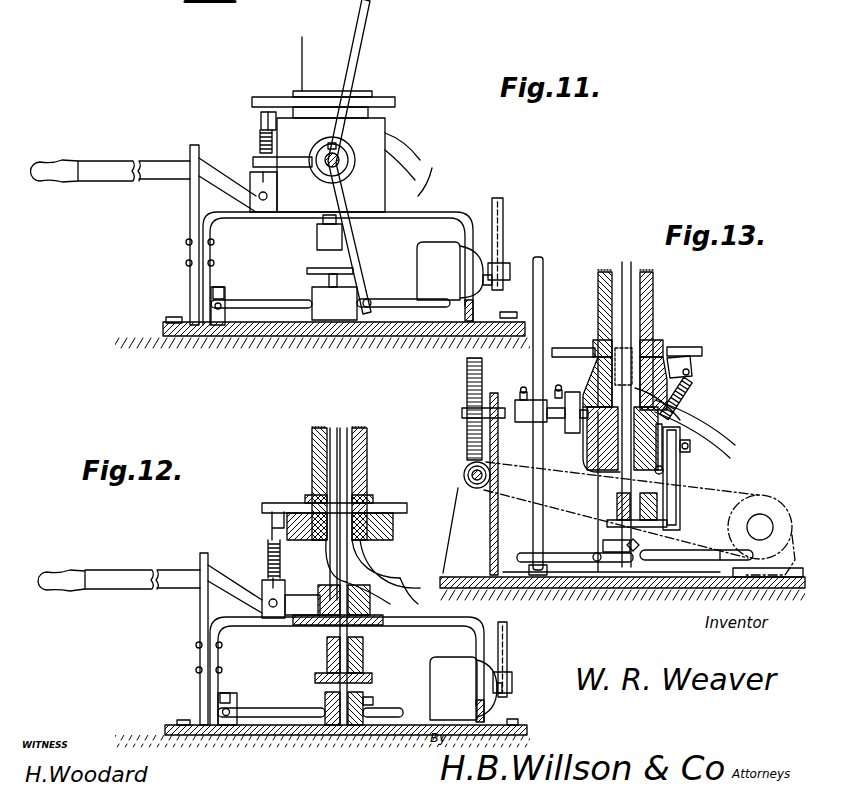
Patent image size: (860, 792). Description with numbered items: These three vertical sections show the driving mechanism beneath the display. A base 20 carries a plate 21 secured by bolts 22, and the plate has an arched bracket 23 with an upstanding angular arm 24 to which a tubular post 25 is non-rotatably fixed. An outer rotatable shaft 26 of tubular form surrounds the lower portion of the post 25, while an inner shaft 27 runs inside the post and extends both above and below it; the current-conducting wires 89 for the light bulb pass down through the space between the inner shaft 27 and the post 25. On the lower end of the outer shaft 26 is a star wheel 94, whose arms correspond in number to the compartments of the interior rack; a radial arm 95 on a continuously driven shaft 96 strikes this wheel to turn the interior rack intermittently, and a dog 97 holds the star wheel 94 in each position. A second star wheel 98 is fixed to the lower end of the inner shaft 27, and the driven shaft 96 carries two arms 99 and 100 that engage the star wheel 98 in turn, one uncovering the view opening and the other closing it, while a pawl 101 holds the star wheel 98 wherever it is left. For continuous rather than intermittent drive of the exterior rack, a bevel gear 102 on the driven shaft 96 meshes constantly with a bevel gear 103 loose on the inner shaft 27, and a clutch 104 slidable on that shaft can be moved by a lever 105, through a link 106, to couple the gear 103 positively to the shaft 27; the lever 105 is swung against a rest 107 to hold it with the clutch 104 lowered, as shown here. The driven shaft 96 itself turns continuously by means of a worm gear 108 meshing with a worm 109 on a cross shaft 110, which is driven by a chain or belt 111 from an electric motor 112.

In FIG. 11, the base 20 is at (183, 343).
In FIG. 13, the base 20 is at (557, 588).
In FIG. 11, the plate 21 is at (163, 327).
In FIG. 12, the plate 21 is at (177, 733).
In FIG. 13, the plate 21 is at (605, 581).
In FIG. 11, the bolts 22 is at (172, 320).
In FIG. 12, the bolts 22 is at (183, 725).
In FIG. 11, the arched bracket 23 is at (427, 205).
In FIG. 12, the arched bracket 23 is at (210, 620).
In FIG. 13, the arched bracket 23 is at (600, 480).
In FIG. 11, the upstanding angular arm 24 is at (387, 148).
In FIG. 12, the upstanding angular arm 24 is at (312, 541).
In FIG. 13, the upstanding angular arm 24 is at (590, 357).
In FIG. 12, the tubular post 25 is at (362, 468).
In FIG. 13, the tubular post 25 is at (644, 325).
In FIG. 11, the outer rotatable shaft 26 is at (333, 60).
In FIG. 12, the outer rotatable shaft 26 is at (312, 458).
In FIG. 13, the outer rotatable shaft 26 is at (598, 290).
In FIG. 12, the inner shaft 27 is at (337, 442).
In FIG. 13, the inner shaft 27 is at (625, 300).
In FIG. 12, the current-conducting wires 89 is at (387, 570).
In FIG. 11, the star wheel 94 is at (293, 97).
In FIG. 12, the star wheel 94 is at (395, 502).
In FIG. 13, the star wheel 94 is at (692, 343).
In FIG. 11, the radial arm 95 is at (257, 157).
In FIG. 13, the radial arm 95 is at (577, 373).
In FIG. 11, the continuously driven shaft 96 is at (352, 150).
In FIG. 13, the continuously driven shaft 96 is at (508, 398).
In FIG. 11, the dog 97 is at (265, 123).
In FIG. 12, the dog 97 is at (270, 516).
In FIG. 13, the dog 97 is at (692, 365).
In FIG. 11, the star wheel 98 is at (260, 302).
In FIG. 12, the star wheel 98 is at (270, 708).
In FIG. 13, the star wheel 98 is at (677, 571).
In FIG. 11, the arm 99 is at (367, 18).
In FIG. 13, the arm 99 is at (541, 267).
In FIG. 11, the arm 100 is at (350, 279).
In FIG. 13, the arm 100 is at (538, 535).
In FIG. 11, the pawl 101 is at (233, 325).
In FIG. 12, the pawl 101 is at (234, 727).
In FIG. 13, the bevel gear 102 is at (612, 431).
In FIG. 12, the bevel gear 103 is at (380, 602).
In FIG. 13, the bevel gear 103 is at (675, 420).
In FIG. 11, the clutch 104 is at (318, 239).
In FIG. 12, the clutch 104 is at (358, 643).
In FIG. 13, the clutch 104 is at (675, 483).
In FIG. 11, the lever 105 is at (157, 163).
In FIG. 12, the lever 105 is at (140, 568).
In FIG. 13, the lever 105 is at (695, 453).
In FIG. 13, the link 106 is at (680, 495).
In FIG. 11, the rest 107 is at (190, 205).
In FIG. 12, the rest 107 is at (200, 605).
In FIG. 13, the worm gear 108 is at (467, 380).
In FIG. 13, the worm 109 is at (462, 470).
In FIG. 13, the cross shaft 110 is at (480, 498).
In FIG. 11, the chain or belt 111 is at (503, 221).
In FIG. 12, the chain or belt 111 is at (505, 653).
In FIG. 11, the electric motor 112 is at (452, 265).
In FIG. 12, the electric motor 112 is at (447, 675).
In FIG. 13, the electric motor 112 is at (792, 497).